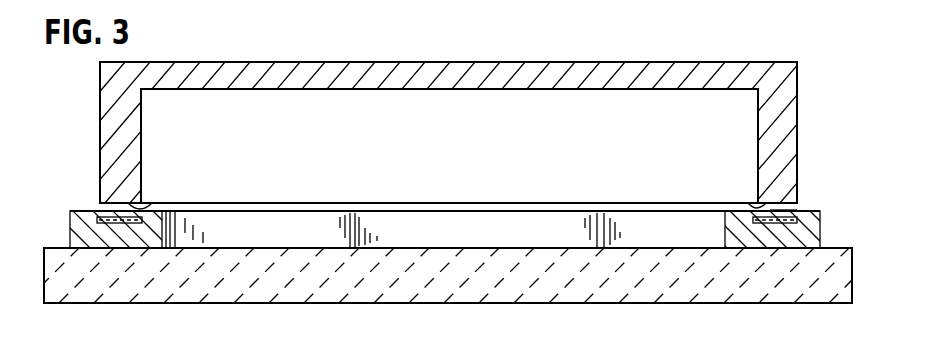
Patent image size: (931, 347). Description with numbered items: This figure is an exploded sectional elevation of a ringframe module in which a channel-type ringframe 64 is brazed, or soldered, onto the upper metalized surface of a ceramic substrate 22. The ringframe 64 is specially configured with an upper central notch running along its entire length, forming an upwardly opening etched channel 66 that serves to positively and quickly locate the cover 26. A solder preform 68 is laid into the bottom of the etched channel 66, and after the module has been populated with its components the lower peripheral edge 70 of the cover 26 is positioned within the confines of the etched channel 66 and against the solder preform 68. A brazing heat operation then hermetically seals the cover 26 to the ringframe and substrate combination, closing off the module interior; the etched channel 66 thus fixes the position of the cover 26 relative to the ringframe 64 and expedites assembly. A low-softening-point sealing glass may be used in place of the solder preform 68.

The ceramic substrate 22 is at (853, 292).
The cover 26 is at (793, 62).
The ringframe 64 is at (832, 237).
The etched channel 66 is at (797, 210).
The solder preform 68 is at (102, 210).
The lower peripheral edge 70 is at (145, 205).